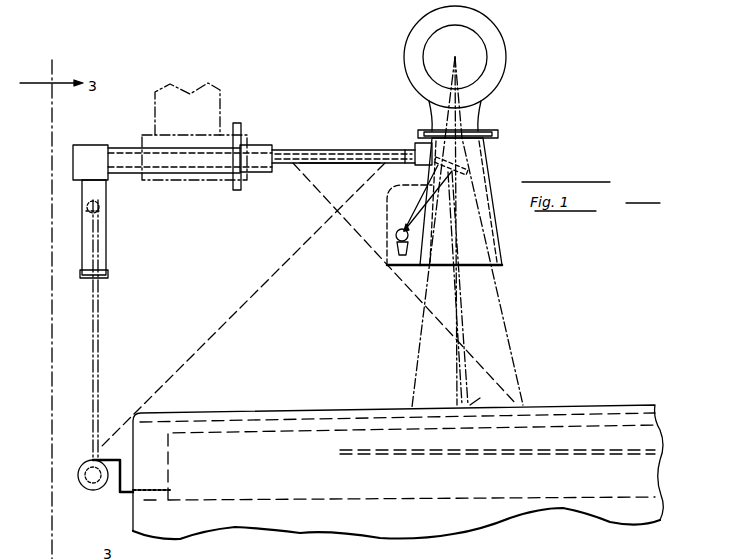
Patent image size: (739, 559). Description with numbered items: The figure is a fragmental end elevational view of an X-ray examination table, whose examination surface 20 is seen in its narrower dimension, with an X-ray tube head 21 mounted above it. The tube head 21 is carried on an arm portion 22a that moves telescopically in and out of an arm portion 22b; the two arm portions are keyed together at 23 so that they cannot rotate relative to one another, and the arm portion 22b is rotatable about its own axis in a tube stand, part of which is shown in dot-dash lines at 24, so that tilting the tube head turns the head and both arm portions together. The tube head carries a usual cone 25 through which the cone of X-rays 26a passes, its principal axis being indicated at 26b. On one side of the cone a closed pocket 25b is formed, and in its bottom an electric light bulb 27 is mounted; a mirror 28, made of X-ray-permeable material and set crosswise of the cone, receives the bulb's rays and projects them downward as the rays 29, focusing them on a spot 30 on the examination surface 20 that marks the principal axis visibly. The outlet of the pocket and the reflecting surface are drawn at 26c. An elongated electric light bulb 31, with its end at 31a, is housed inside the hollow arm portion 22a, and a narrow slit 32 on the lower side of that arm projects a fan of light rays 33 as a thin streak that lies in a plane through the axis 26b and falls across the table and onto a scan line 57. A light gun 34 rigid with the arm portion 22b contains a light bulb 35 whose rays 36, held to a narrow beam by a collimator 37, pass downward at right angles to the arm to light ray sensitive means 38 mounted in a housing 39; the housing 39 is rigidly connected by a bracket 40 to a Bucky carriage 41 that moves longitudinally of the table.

The examination surface 20 is at (575, 405).
The X-ray tube head 21 is at (504, 60).
The arm portion 22a is at (275, 150).
The arm portion 22b is at (120, 150).
The key 23 is at (250, 150).
The tube stand 24 is at (218, 92).
The cone 25 is at (488, 165).
The closed pocket 25b is at (396, 221).
The cone of X-rays 26a is at (432, 255).
The principal axis 26b is at (455, 290).
The mirror 26c is at (438, 182).
The electric light bulb 27 is at (398, 238).
The mirror 28 is at (481, 133).
The reflected light rays 29 is at (455, 335).
The spot of light 30 is at (485, 393).
The elongated electric light bulb 31 is at (343, 150).
The rod end 31a is at (394, 148).
The slit 32 is at (337, 164).
The fan of light rays 33 is at (406, 285).
The light gun 34 is at (106, 234).
The light bulb 35 is at (103, 210).
The light rays 36 is at (99, 327).
The collimator 37 is at (108, 272).
The light ray sensitive means 38 is at (86, 488).
The housing 39 is at (113, 492).
The bracket 40 is at (150, 501).
The Bucky carriage 41 is at (172, 470).
The scan line on web 57 is at (509, 455).